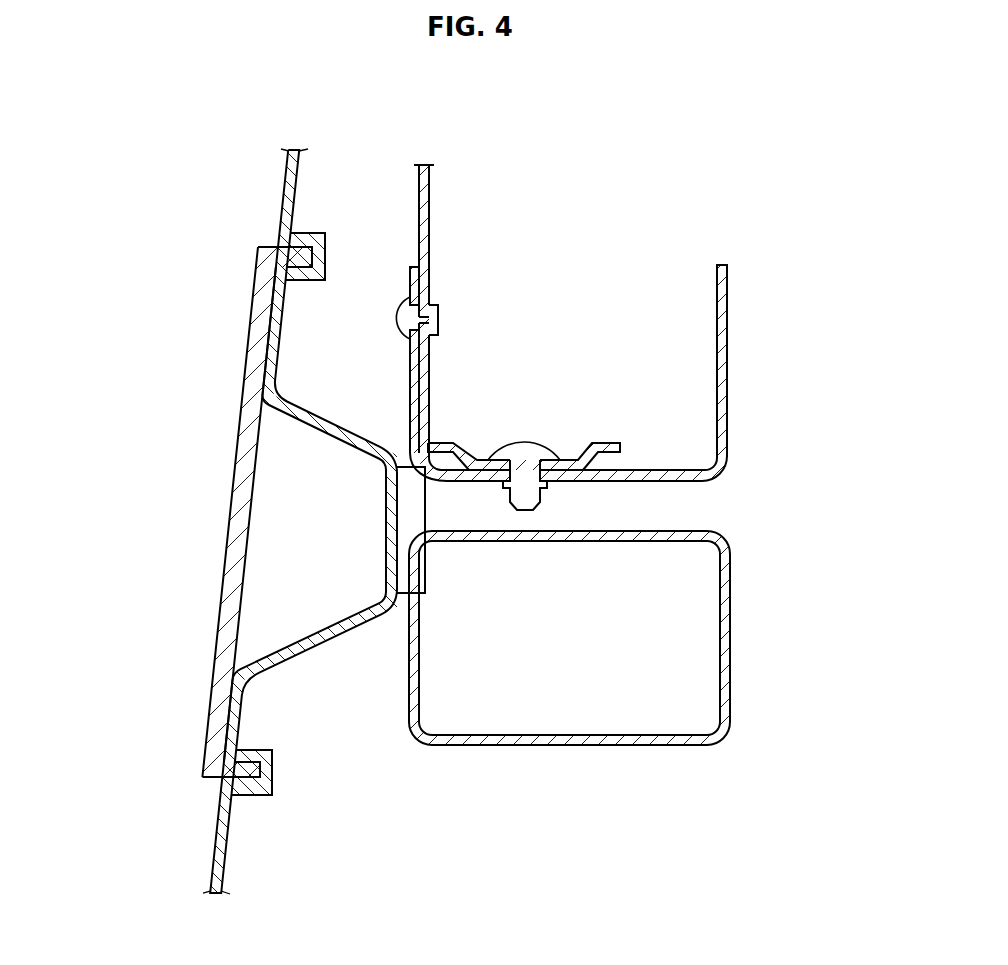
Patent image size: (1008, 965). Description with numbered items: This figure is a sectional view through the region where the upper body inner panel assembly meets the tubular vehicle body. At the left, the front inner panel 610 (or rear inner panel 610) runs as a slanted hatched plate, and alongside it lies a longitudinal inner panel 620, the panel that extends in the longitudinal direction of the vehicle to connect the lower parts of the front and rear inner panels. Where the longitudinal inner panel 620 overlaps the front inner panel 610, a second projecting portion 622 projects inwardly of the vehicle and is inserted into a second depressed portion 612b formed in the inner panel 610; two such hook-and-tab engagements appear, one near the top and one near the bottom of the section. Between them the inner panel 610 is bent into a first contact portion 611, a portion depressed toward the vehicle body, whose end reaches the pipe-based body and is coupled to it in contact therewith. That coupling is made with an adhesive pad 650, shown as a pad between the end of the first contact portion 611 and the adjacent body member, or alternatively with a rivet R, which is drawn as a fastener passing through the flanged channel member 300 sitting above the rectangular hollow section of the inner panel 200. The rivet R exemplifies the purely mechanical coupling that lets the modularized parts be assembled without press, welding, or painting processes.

The front inner panel / rear inner panel 610 is at (206, 845).
The first contact portion 611 is at (327, 640).
The second depressed portion 612b is at (325, 255).
The longitudinal inner panel 620 is at (224, 542).
The second projecting portion 622 is at (292, 250).
The adhesive pad 650 is at (412, 507).
The inner panel 200 is at (725, 627).
The channel member 300 is at (728, 337).
The rivet R is at (433, 328).